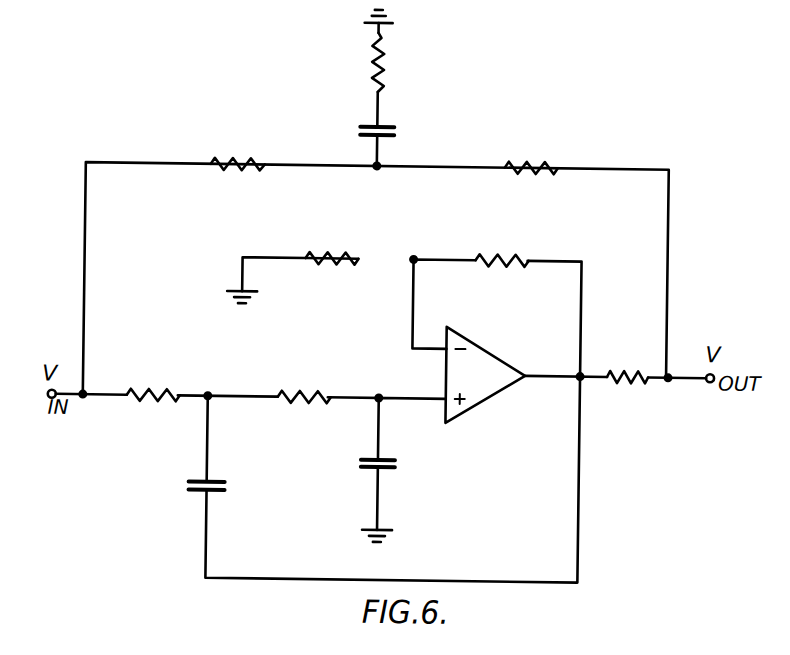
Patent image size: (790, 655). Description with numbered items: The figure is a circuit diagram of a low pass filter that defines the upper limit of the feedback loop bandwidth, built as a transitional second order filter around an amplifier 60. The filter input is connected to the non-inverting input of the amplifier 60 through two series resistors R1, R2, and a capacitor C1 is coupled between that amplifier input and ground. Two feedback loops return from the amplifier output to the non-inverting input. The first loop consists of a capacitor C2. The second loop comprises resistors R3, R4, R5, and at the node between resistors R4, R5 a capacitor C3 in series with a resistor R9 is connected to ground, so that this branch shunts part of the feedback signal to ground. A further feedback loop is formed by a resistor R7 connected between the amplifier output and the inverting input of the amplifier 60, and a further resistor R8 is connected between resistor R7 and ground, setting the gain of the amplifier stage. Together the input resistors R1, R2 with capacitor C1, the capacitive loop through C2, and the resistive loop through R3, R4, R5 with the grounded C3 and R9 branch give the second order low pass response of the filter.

The amplifier 60 is at (484, 353).
The resistor R1 is at (154, 379).
The resistor R2 is at (305, 384).
The resistor R3 is at (629, 363).
The resistor R4 is at (531, 155).
The resistor R5 is at (238, 151).
The resistor R7 is at (502, 246).
The resistor R8 is at (333, 245).
The resistor R9 is at (396, 63).
The capacitor C1 is at (392, 467).
The capacitor C2 is at (221, 493).
The capacitor C3 is at (394, 133).